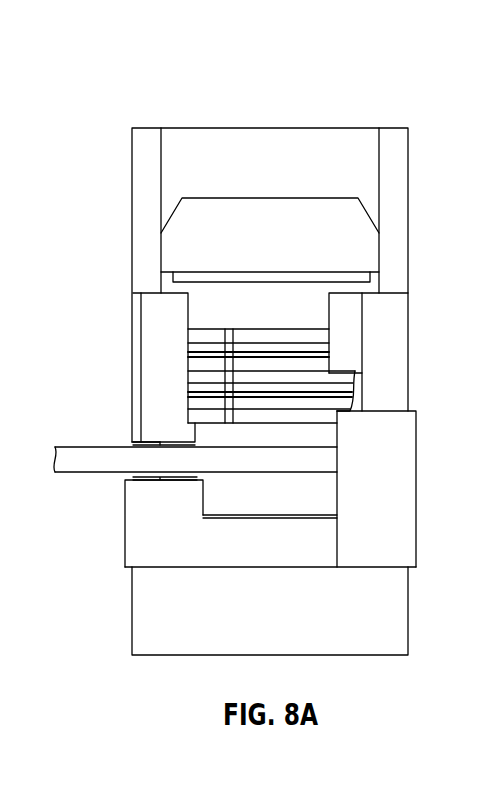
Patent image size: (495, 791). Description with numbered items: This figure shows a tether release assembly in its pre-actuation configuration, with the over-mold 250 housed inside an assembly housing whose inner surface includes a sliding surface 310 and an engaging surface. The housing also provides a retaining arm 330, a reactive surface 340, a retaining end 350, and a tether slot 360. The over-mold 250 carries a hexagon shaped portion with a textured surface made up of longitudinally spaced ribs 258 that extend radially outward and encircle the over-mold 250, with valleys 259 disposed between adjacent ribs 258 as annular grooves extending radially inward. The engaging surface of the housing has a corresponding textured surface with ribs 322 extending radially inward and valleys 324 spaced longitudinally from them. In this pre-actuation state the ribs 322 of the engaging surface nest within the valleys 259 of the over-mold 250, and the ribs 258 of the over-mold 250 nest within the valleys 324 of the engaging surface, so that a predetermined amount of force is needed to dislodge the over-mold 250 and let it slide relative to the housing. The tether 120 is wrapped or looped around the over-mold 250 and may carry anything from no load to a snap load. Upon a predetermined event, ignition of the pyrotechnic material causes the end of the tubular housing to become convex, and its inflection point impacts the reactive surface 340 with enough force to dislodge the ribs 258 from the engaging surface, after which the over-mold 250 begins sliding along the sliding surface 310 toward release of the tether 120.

The sliding surface 310 is at (317, 140).
The over-mold 250 is at (368, 206).
The ribs 322 is at (188, 355).
The valleys 324 is at (188, 378).
The retaining arm 330 is at (345, 338).
The ribs 258 is at (368, 378).
The valleys 259 is at (367, 395).
The tether slot 360 is at (131, 440).
The tether 120 is at (90, 467).
The reactive surface 340 is at (237, 515).
The retaining end 350 is at (397, 513).